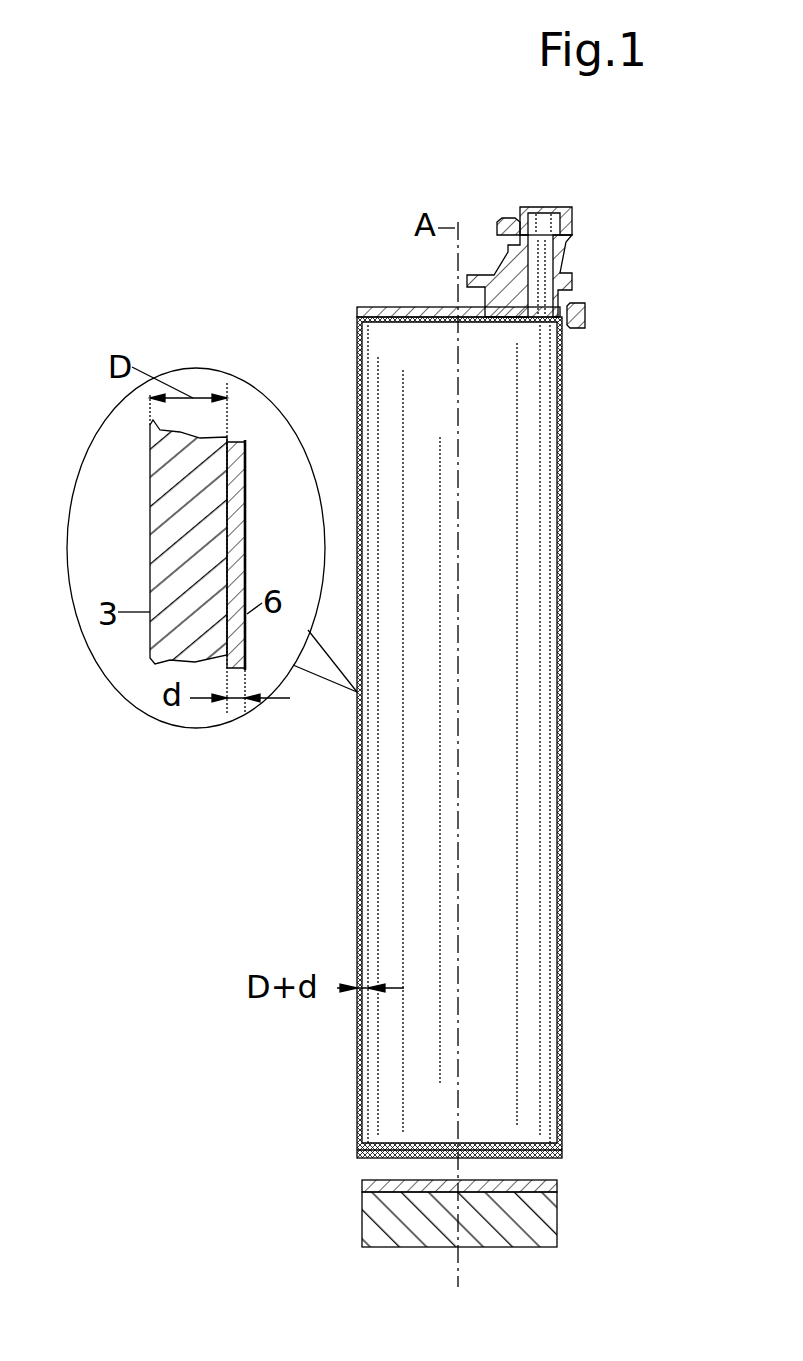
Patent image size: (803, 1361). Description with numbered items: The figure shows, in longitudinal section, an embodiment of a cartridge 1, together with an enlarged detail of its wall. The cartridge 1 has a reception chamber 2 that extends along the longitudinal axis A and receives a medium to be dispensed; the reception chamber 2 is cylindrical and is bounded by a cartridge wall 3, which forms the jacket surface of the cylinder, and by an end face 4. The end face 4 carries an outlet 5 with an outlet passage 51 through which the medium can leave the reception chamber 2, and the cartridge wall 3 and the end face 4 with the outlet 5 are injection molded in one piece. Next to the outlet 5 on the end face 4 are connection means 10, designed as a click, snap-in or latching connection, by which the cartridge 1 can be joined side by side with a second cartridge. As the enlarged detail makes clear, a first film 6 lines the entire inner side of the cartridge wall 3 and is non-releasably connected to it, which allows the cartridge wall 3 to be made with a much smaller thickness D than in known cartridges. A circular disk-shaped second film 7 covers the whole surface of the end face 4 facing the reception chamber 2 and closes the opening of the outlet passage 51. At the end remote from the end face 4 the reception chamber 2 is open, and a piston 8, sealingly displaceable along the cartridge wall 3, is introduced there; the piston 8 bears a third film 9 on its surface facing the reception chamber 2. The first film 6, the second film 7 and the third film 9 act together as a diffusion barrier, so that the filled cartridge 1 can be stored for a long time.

The cartridge 1 is at (345, 210).
The reception chamber 2 is at (417, 890).
The cartridge wall 3 is at (563, 752).
The end face 4 is at (408, 310).
The outlet 5 is at (511, 217).
The outlet passage 51 is at (545, 222).
The first film 6 is at (370, 1078).
The second film 7 is at (503, 318).
The piston 8 is at (558, 1215).
The third film 9 is at (557, 1183).
The connection means 10 is at (583, 305).